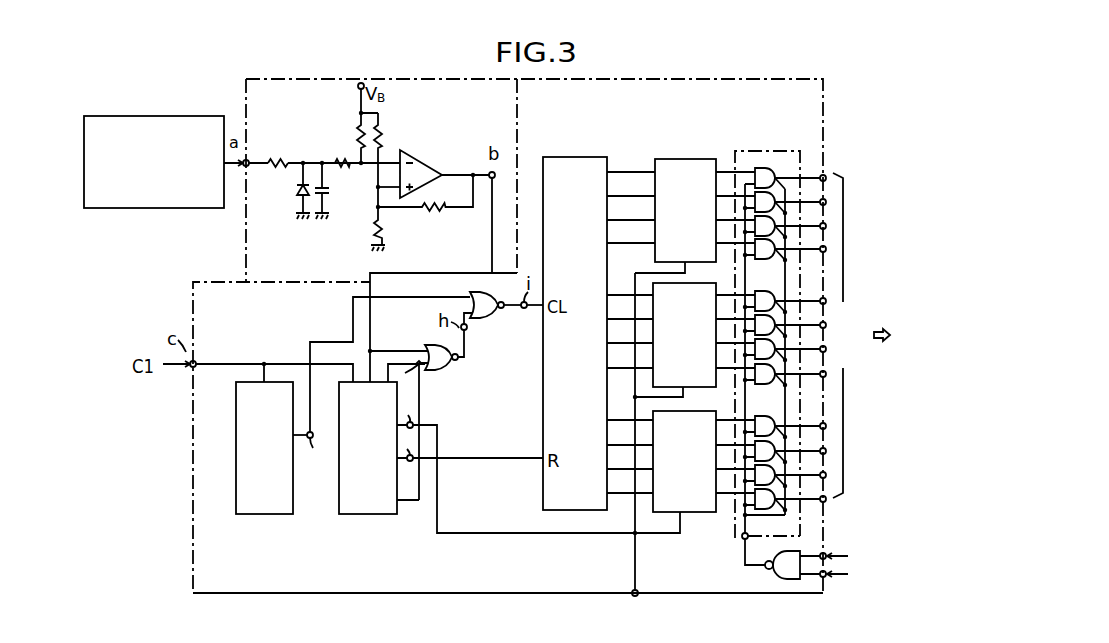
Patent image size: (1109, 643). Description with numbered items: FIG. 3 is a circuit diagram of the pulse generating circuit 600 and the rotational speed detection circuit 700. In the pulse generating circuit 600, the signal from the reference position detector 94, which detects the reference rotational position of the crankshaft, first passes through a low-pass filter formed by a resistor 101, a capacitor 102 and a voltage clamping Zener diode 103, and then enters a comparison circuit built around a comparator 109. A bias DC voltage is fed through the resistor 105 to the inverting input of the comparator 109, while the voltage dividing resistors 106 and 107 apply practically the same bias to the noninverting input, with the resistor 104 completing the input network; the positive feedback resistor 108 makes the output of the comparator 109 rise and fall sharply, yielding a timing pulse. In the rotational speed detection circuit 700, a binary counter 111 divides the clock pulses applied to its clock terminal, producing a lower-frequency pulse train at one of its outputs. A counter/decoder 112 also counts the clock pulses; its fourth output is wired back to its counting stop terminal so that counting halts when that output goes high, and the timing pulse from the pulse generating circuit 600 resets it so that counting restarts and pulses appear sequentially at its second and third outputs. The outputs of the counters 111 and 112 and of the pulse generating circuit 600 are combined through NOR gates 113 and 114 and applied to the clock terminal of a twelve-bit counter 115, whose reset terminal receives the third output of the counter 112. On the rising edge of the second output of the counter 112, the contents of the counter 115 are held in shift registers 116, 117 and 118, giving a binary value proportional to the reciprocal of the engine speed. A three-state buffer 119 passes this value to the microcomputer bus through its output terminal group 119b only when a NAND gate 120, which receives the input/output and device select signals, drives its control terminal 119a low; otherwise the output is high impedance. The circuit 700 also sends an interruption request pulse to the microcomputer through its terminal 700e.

The reference position detector 94 is at (185, 116).
The resistor 101 is at (284, 157).
The capacitor 102 is at (352, 190).
The voltage clamping Zener diode 103 is at (297, 196).
The resistor 104 is at (340, 156).
The resistor 105 is at (357, 130).
The voltage dividing resistor 106 is at (382, 139).
The voltage dividing resistor 107 is at (374, 230).
The positive feedback resistor 108 is at (440, 213).
The comparator 109 is at (430, 167).
The binary counter 111 is at (272, 514).
The counter/decoder 112 is at (368, 514).
The NOR gate 113 is at (442, 370).
The NOR gate 114 is at (496, 318).
The 12-bit counter 115 is at (582, 157).
The shift register 116 is at (694, 158).
The shift register 117 is at (700, 272).
The shift register 118 is at (692, 401).
The three-state buffer 119 is at (785, 151).
The control terminal 119a is at (742, 539).
The output terminal group 119b is at (880, 337).
The NAND gate 120 is at (790, 579).
The pulse generating circuit 600 is at (328, 79).
The rotational speed detection circuit 700 is at (742, 79).
The terminal 700e is at (636, 596).